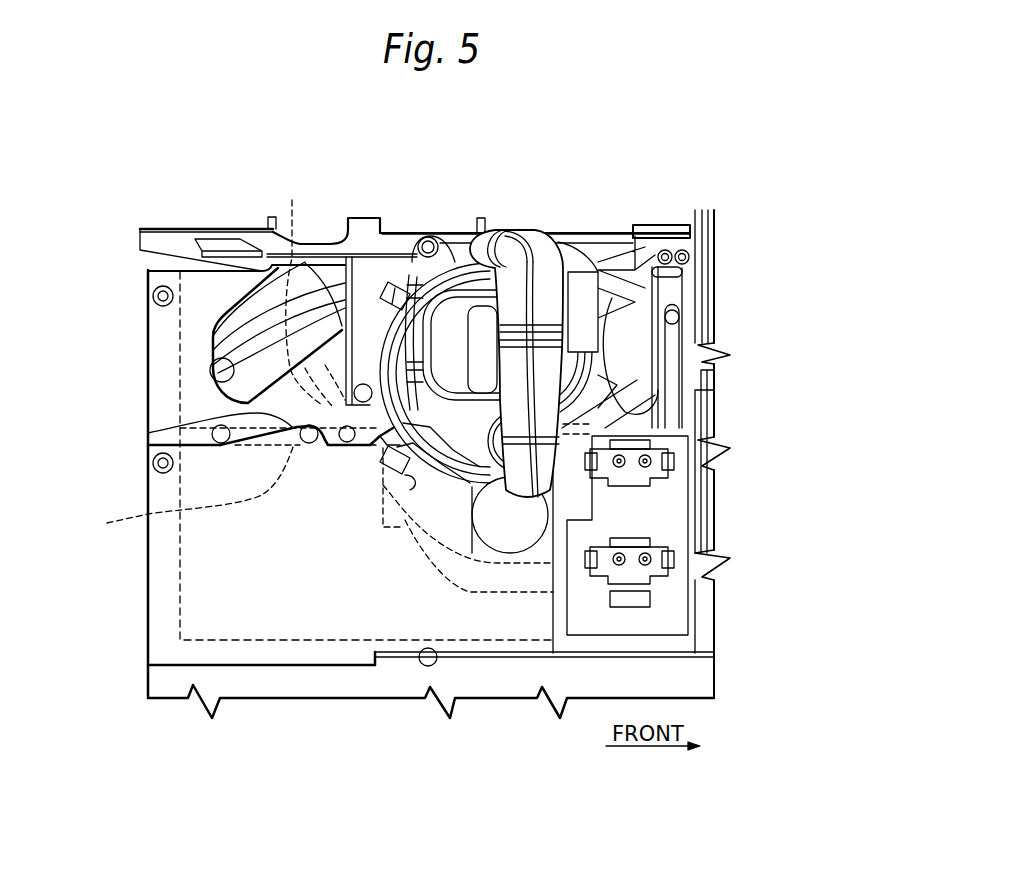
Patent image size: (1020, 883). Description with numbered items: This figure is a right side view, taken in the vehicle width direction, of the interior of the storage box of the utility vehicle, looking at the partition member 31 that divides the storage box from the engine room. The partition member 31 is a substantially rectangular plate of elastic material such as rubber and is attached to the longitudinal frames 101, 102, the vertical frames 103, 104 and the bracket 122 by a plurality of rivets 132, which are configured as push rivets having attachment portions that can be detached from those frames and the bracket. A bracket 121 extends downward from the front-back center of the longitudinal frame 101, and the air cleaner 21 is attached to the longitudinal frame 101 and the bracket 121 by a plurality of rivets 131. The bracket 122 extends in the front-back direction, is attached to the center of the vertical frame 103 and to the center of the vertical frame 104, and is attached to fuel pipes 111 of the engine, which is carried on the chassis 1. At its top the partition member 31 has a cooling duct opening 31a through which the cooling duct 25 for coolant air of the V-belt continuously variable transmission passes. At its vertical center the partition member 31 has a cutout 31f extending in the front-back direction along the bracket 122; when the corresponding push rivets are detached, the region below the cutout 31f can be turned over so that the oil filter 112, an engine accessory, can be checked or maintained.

The chassis 1 is at (676, 214).
The air cleaner 21 is at (448, 325).
The cooling duct 25 is at (247, 312).
The partition member 31 is at (192, 348).
The cooling duct opening 31a is at (213, 384).
The cutout 31f is at (235, 413).
The longitudinal frame 101 is at (635, 258).
The longitudinal frame 102 is at (260, 657).
The vertical frame 103 is at (698, 265).
The vertical frame 104 is at (162, 596).
The fuel pipes 111 is at (308, 291).
The oil filter 112 is at (393, 655).
The bracket 121 is at (357, 293).
The bracket 122 is at (378, 529).
The rivets 131 is at (429, 237).
The rivets 132 is at (152, 294).